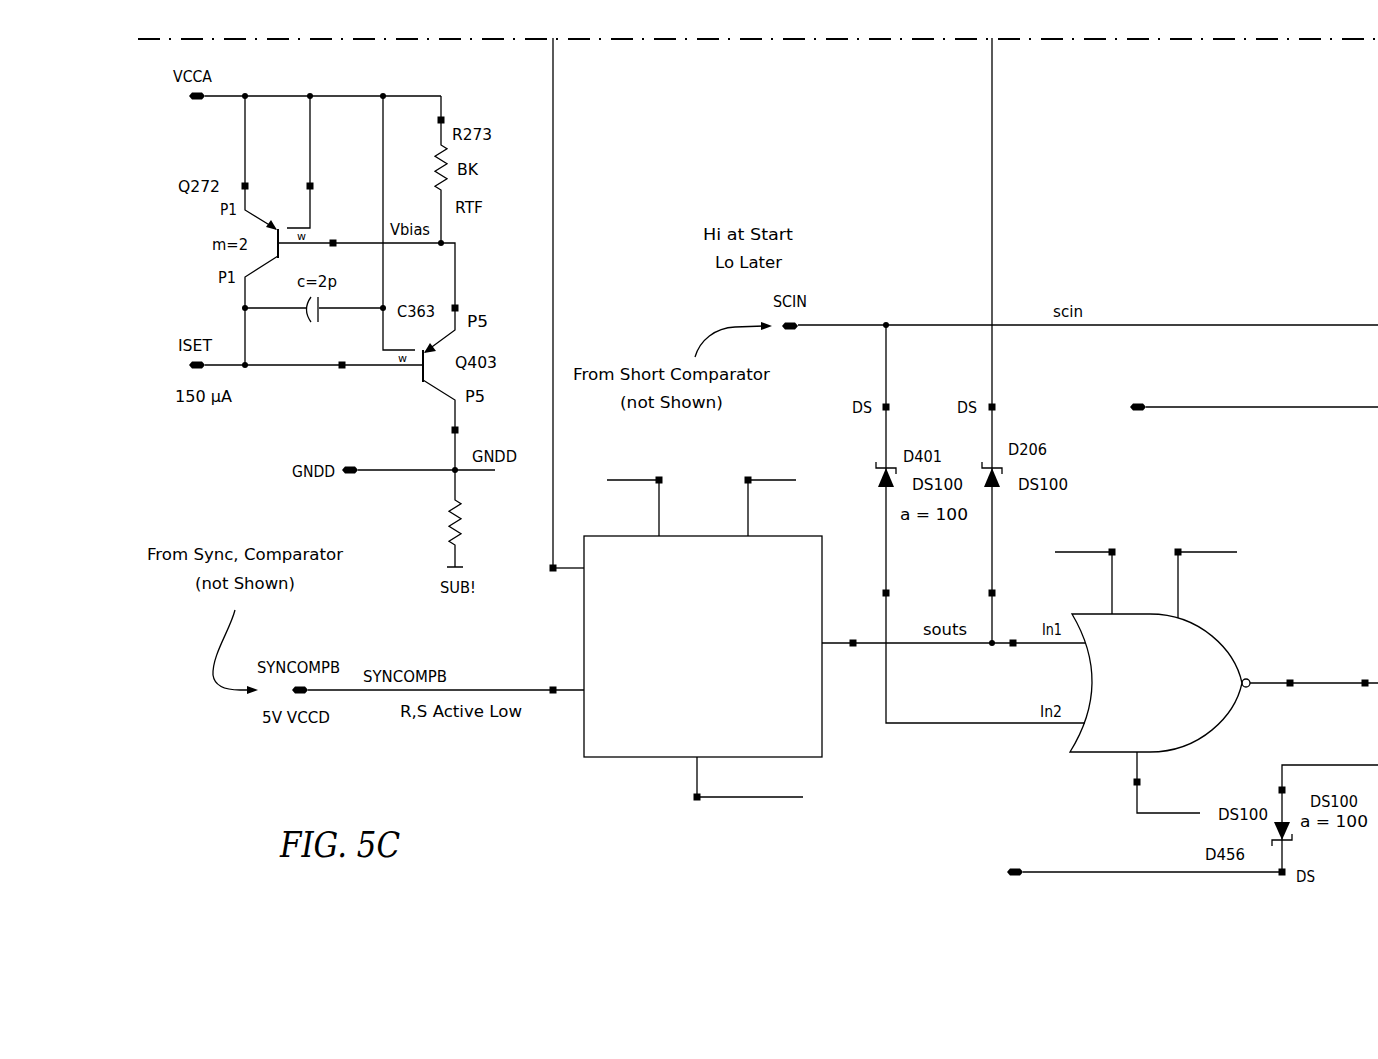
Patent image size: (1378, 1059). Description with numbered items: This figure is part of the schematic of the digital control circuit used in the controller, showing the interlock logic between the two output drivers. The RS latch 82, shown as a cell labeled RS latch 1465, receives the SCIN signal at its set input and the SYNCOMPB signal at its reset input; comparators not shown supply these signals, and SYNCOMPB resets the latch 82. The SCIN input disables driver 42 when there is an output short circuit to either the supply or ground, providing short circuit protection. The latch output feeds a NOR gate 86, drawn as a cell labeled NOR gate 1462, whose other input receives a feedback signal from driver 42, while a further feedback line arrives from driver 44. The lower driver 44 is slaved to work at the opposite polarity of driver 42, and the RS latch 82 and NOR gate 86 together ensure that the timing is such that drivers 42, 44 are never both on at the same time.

The RS latch 82 is at (818, 665).
The NOR gate 86 is at (1216, 671).
The RS latch cell 1465 is at (703, 602).
The NOR gate cell 1462 is at (1237, 614).
The driver 42 is at (1080, 862).
The lower driver 44 is at (1188, 398).